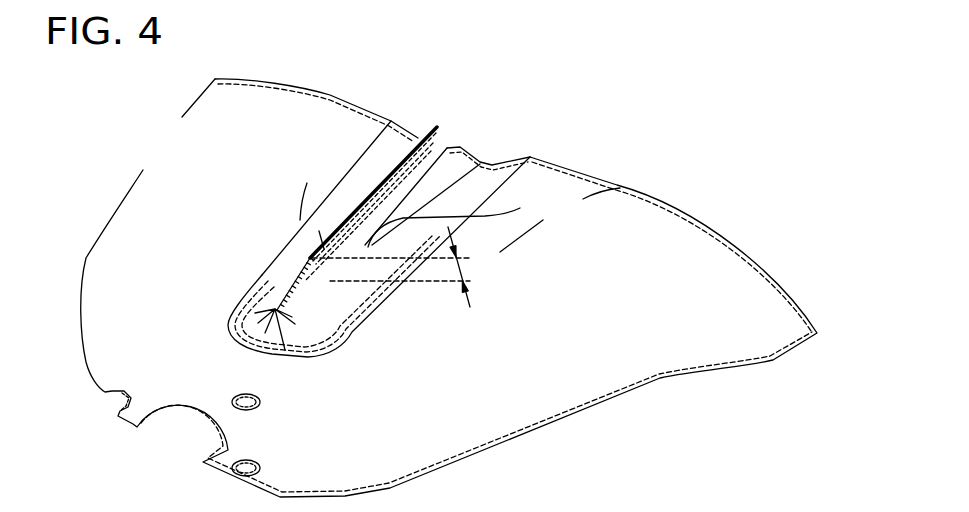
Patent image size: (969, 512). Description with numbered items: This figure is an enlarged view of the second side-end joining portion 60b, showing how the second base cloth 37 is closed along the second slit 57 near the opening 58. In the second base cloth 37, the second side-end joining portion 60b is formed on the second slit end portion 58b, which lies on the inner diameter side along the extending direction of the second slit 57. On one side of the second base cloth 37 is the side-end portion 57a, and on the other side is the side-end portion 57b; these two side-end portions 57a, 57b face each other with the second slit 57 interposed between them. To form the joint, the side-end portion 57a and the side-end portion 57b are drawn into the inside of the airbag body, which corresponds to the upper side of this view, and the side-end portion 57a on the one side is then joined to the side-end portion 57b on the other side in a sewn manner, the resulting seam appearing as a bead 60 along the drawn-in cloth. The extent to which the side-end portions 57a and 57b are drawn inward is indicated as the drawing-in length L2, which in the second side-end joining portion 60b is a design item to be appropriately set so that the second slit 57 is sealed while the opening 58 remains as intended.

The second base cloth 37 is at (520, 208).
The second slit 57 is at (449, 115).
The side-end portion 57a is at (423, 133).
The side-end portion 57b is at (443, 148).
The opening 58 is at (270, 270).
The second slit end portion 58b is at (290, 274).
The bead 60 is at (291, 246).
The second side-end joining portion 60b is at (282, 280).
The drawing-in length L2 is at (405, 267).